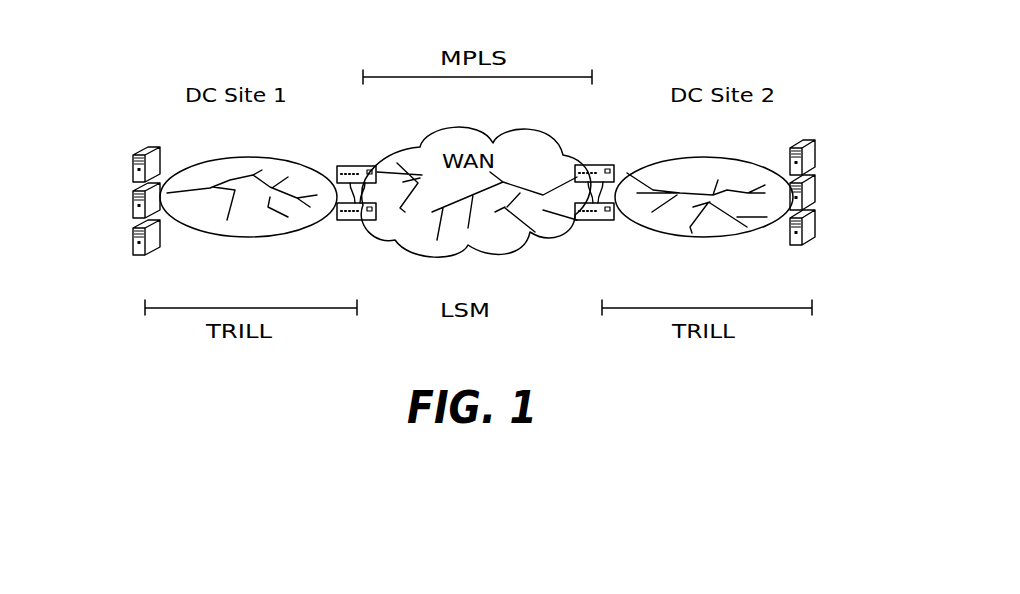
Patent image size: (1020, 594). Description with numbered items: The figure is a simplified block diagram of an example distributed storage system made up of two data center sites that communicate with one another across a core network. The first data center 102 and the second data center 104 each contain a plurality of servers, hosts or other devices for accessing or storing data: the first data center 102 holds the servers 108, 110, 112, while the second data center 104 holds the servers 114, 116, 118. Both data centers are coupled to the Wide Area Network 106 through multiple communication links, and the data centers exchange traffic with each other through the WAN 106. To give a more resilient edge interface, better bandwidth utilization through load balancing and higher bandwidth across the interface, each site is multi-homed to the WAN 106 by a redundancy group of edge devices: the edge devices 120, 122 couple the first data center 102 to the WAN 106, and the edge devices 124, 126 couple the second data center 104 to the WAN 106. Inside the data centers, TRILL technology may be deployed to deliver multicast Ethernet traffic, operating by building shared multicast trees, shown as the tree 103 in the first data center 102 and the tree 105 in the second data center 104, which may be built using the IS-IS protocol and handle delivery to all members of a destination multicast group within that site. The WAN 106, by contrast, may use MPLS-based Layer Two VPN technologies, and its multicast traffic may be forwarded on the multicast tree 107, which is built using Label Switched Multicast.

The data center 102 is at (237, 146).
The shared multicast tree 103 is at (240, 228).
The data center 104 is at (723, 145).
The shared multicast tree 105 is at (662, 223).
The Wide Area Network 106 is at (451, 115).
The multicast tree 107 is at (480, 227).
The server 108 is at (133, 170).
The server 110 is at (133, 206).
The server 112 is at (133, 242).
The server 114 is at (816, 157).
The server 116 is at (816, 193).
The server 118 is at (816, 228).
The edge device 120 is at (360, 166).
The edge device 122 is at (353, 221).
The edge device 124 is at (597, 165).
The edge device 126 is at (592, 221).